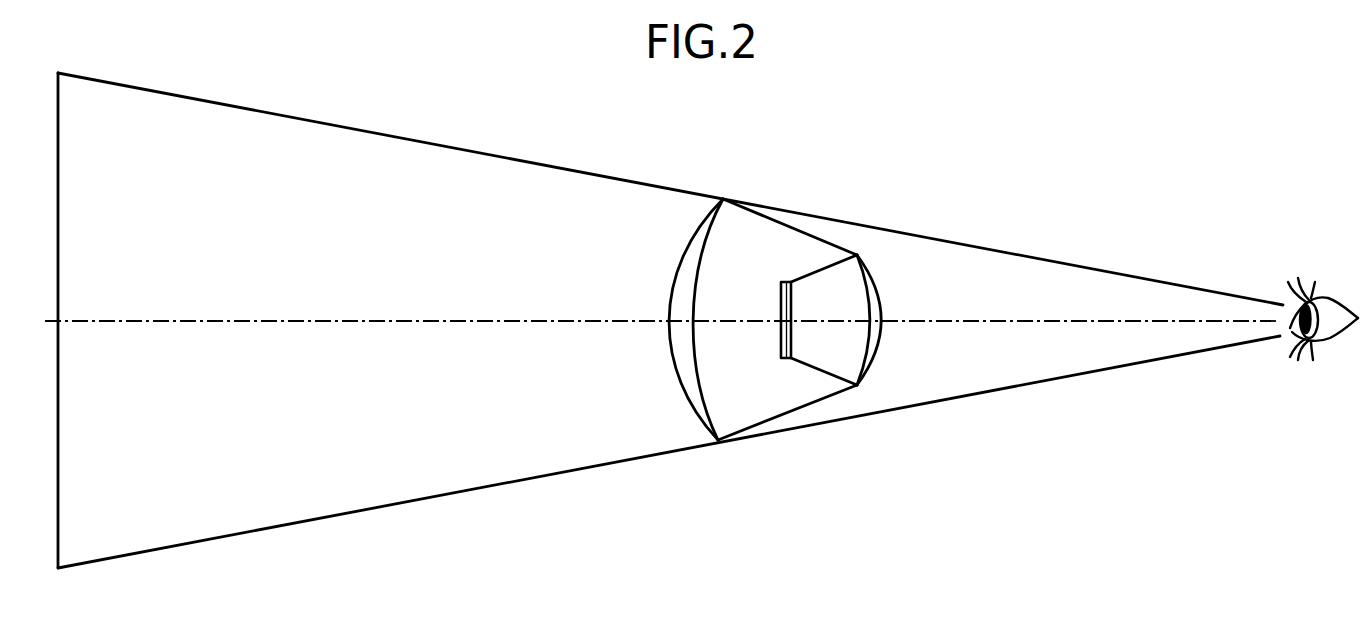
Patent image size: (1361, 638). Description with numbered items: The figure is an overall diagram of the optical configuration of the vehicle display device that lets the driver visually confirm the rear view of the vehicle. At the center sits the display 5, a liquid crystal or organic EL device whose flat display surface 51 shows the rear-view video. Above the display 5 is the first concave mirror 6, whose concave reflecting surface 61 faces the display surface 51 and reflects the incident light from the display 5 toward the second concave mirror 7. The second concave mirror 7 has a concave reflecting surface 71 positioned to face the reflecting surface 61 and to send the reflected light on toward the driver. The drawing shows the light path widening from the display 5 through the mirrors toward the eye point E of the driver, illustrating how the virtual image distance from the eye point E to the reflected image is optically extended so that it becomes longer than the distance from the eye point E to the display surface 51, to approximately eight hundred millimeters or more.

The display 5 is at (783, 360).
The display surface 51 is at (792, 343).
The first concave mirror 6 is at (873, 358).
The reflecting surface 61 is at (860, 279).
The second concave mirror 7 is at (681, 412).
The reflecting surface 71 is at (710, 233).
The eye point E is at (1300, 320).